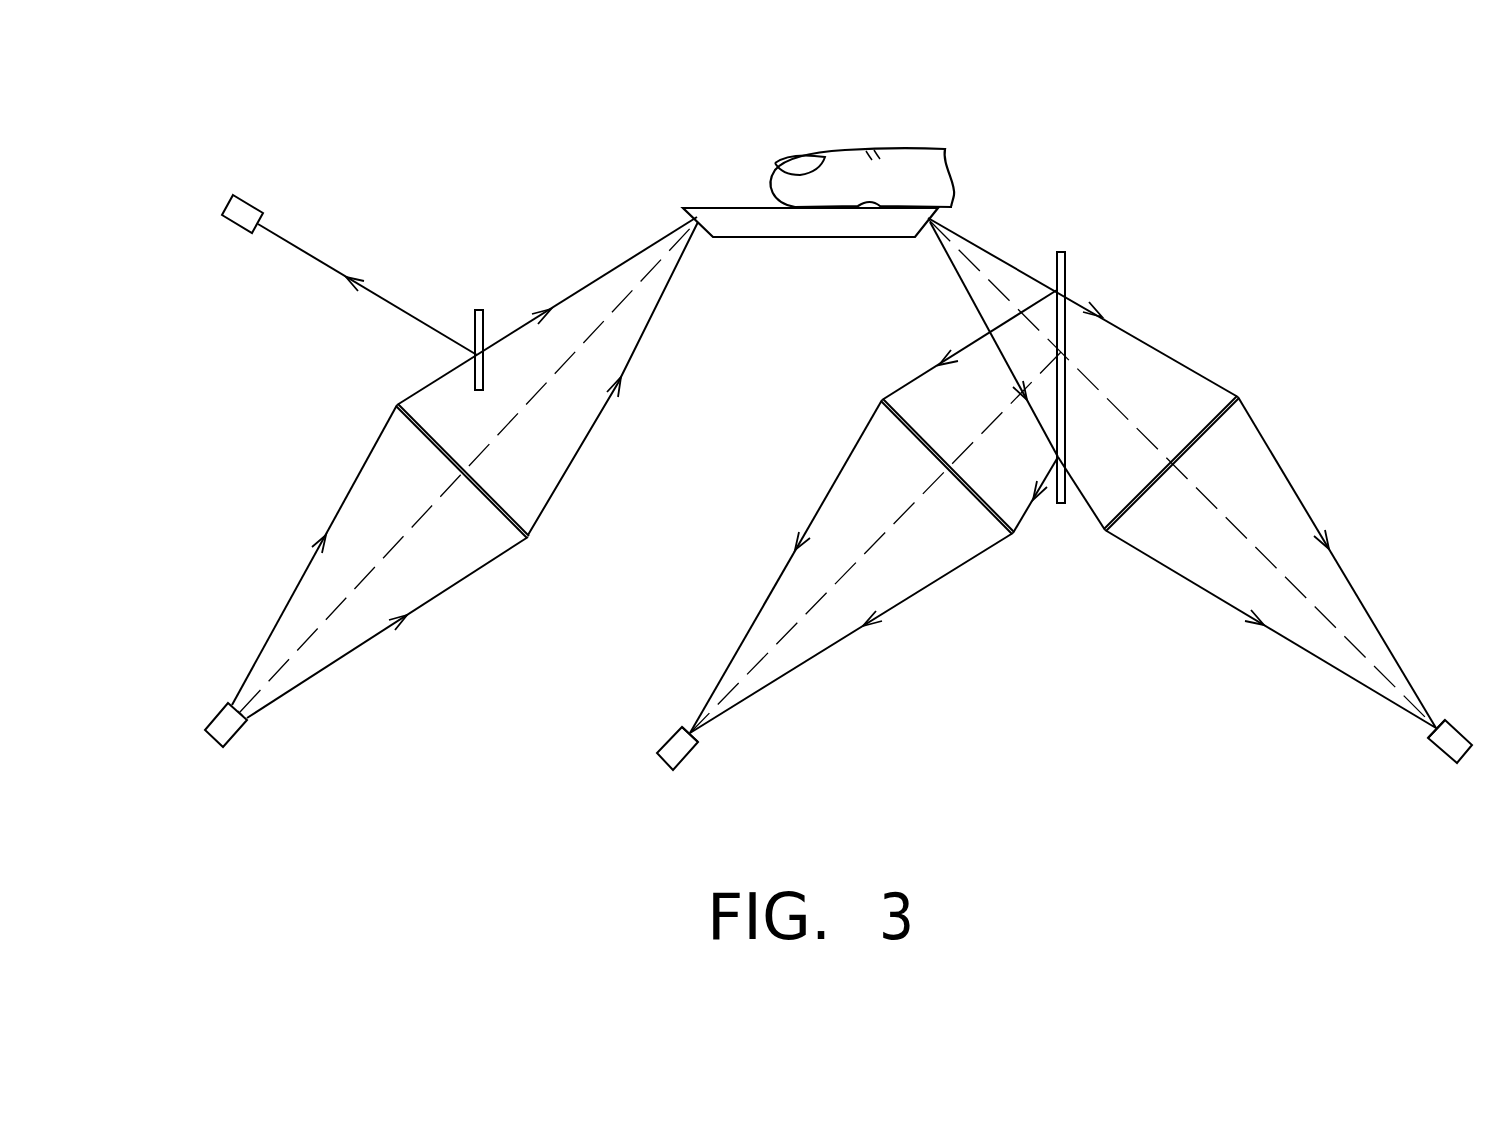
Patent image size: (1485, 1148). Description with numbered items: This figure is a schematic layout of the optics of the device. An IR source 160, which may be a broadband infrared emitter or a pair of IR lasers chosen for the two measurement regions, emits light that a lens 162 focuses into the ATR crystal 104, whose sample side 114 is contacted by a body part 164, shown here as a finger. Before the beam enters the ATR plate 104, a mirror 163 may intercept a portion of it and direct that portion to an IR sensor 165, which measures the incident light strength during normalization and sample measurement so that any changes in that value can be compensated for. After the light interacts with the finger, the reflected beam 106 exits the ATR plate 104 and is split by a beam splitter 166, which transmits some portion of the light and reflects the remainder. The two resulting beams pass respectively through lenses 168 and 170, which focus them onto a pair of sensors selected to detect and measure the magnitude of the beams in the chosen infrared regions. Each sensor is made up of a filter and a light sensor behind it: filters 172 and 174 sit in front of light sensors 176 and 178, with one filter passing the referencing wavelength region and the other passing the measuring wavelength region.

The ATR crystal 104 is at (757, 228).
The reflected beam 106 is at (995, 248).
The sample side 114 is at (722, 208).
The IR source 160 is at (230, 728).
The lens 162 is at (530, 540).
The mirror 163 is at (478, 308).
The body part 164 is at (843, 150).
The IR sensor 165 is at (232, 222).
The beam splitter 166 is at (1068, 266).
The lens 168 is at (1015, 537).
The lens 170 is at (1240, 396).
The filter 172 is at (700, 740).
The filter 174 is at (1427, 730).
The light sensor 176 is at (668, 753).
The light sensor 178 is at (1463, 762).